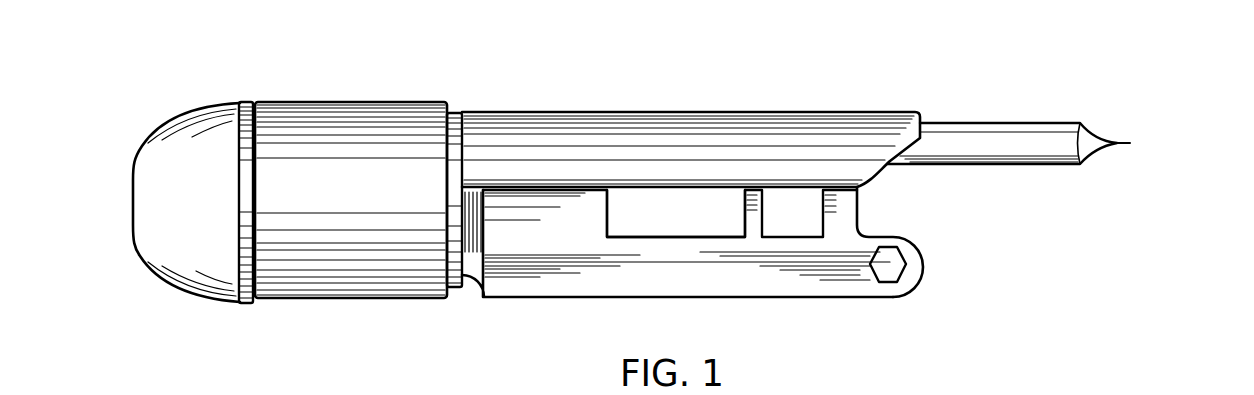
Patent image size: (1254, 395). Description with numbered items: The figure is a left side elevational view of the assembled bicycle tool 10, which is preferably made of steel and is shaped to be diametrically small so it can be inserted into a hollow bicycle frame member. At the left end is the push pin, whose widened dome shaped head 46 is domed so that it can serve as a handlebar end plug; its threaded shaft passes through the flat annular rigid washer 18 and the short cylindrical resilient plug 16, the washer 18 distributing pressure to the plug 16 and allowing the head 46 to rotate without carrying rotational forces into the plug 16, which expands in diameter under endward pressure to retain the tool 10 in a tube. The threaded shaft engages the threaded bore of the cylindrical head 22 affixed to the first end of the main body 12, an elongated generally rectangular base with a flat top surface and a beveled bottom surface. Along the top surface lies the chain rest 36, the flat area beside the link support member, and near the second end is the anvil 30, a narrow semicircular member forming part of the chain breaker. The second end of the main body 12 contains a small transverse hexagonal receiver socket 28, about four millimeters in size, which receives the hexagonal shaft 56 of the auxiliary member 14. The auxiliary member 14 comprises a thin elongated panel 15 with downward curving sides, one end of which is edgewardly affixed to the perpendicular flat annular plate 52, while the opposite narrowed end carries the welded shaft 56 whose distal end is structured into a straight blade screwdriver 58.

The bicycle tool 10 is at (580, 100).
The main body 12 is at (789, 298).
The auxiliary member 14 is at (687, 111).
The elongated panel 15 is at (783, 125).
The resilient plug 16 is at (337, 101).
The washer 18 is at (244, 101).
The cylindrical head 22 is at (520, 217).
The hexagonal receiver socket 28 is at (889, 270).
The anvil 30 is at (858, 203).
The chain rest 36 is at (694, 233).
The dome shaped head 46 is at (167, 122).
The annular plate 52 is at (457, 112).
The hexagonal shaft 56 is at (1005, 122).
The screwdriver 58 is at (1130, 143).